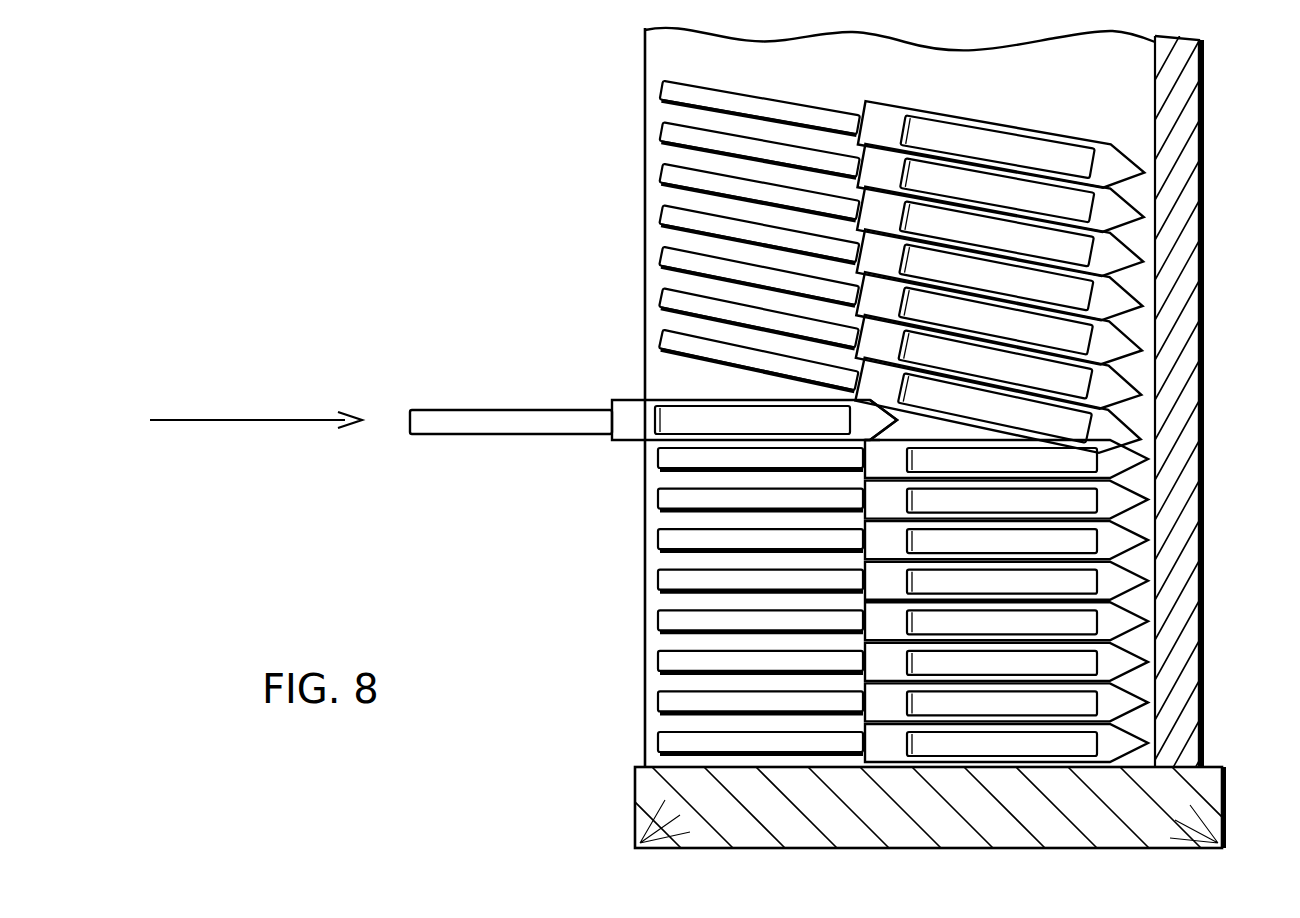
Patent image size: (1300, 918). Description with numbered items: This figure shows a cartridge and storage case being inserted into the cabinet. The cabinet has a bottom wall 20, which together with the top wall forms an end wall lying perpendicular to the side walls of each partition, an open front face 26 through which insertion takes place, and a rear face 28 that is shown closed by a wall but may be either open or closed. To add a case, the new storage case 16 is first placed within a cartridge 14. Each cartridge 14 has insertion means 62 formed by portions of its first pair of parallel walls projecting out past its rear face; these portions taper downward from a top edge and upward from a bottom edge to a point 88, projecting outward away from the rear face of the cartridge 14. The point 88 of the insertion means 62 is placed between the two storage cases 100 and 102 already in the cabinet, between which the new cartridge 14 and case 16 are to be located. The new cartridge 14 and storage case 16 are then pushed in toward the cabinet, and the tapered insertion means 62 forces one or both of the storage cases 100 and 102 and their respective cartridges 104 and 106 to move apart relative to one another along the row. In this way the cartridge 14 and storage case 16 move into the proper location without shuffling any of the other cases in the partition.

The cartridge 14 is at (673, 399).
The storage case 16 is at (495, 410).
The bottom wall 20 is at (634, 777).
The open front face 26 is at (647, 75).
The rear face 28 is at (1204, 572).
The insertion means 62 is at (882, 413).
The point 88 is at (902, 418).
The storage case 100 is at (674, 348).
The storage case 102 is at (683, 461).
The cartridge 104 is at (1128, 404).
The cartridge 106 is at (1127, 462).